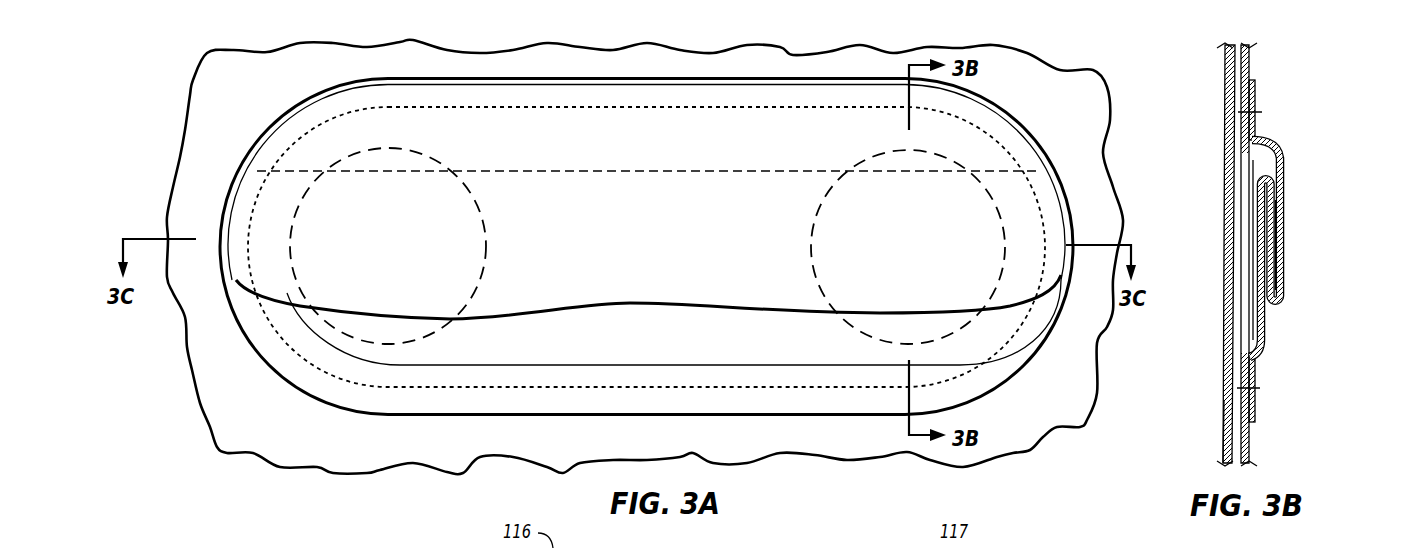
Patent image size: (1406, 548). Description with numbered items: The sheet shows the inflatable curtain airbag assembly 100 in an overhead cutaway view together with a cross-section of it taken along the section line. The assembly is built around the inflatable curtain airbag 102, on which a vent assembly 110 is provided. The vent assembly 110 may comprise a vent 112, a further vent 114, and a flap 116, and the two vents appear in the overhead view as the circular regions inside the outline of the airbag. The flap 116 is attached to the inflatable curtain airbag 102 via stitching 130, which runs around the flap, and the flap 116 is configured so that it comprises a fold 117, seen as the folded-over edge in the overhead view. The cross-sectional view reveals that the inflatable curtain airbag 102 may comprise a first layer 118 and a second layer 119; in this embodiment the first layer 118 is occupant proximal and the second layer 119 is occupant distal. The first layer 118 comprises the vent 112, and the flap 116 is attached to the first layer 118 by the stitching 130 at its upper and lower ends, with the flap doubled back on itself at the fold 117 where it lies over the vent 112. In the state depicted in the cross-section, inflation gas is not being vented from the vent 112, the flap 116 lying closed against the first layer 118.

In FIG. 3A, the inflatable curtain airbag assembly 100 is at (625, 280).
In FIG. 3A, the inflatable curtain airbag 102 is at (1000, 423).
In FIG. 3B, the inflatable curtain airbag 102 is at (1213, 75).
In FIG. 3A, the vent assembly 110 is at (272, 100).
In FIG. 3A, the vent 112 is at (810, 258).
In FIG. 3B, the vent 112 is at (1245, 287).
In FIG. 3A, the vent 114 is at (487, 260).
In FIG. 3A, the flap 116 is at (282, 280).
In FIG. 3B, the flap 116 is at (1287, 187).
In FIG. 3A, the fold 117 is at (300, 196).
In FIG. 3B, the fold 117 is at (1279, 262).
In FIG. 3B, the first layer 118 is at (1250, 68).
In FIG. 3B, the second layer 119 is at (1224, 414).
In FIG. 3A, the stitching 130 is at (390, 388).
In FIG. 3B, the stitching 130 is at (1262, 112).